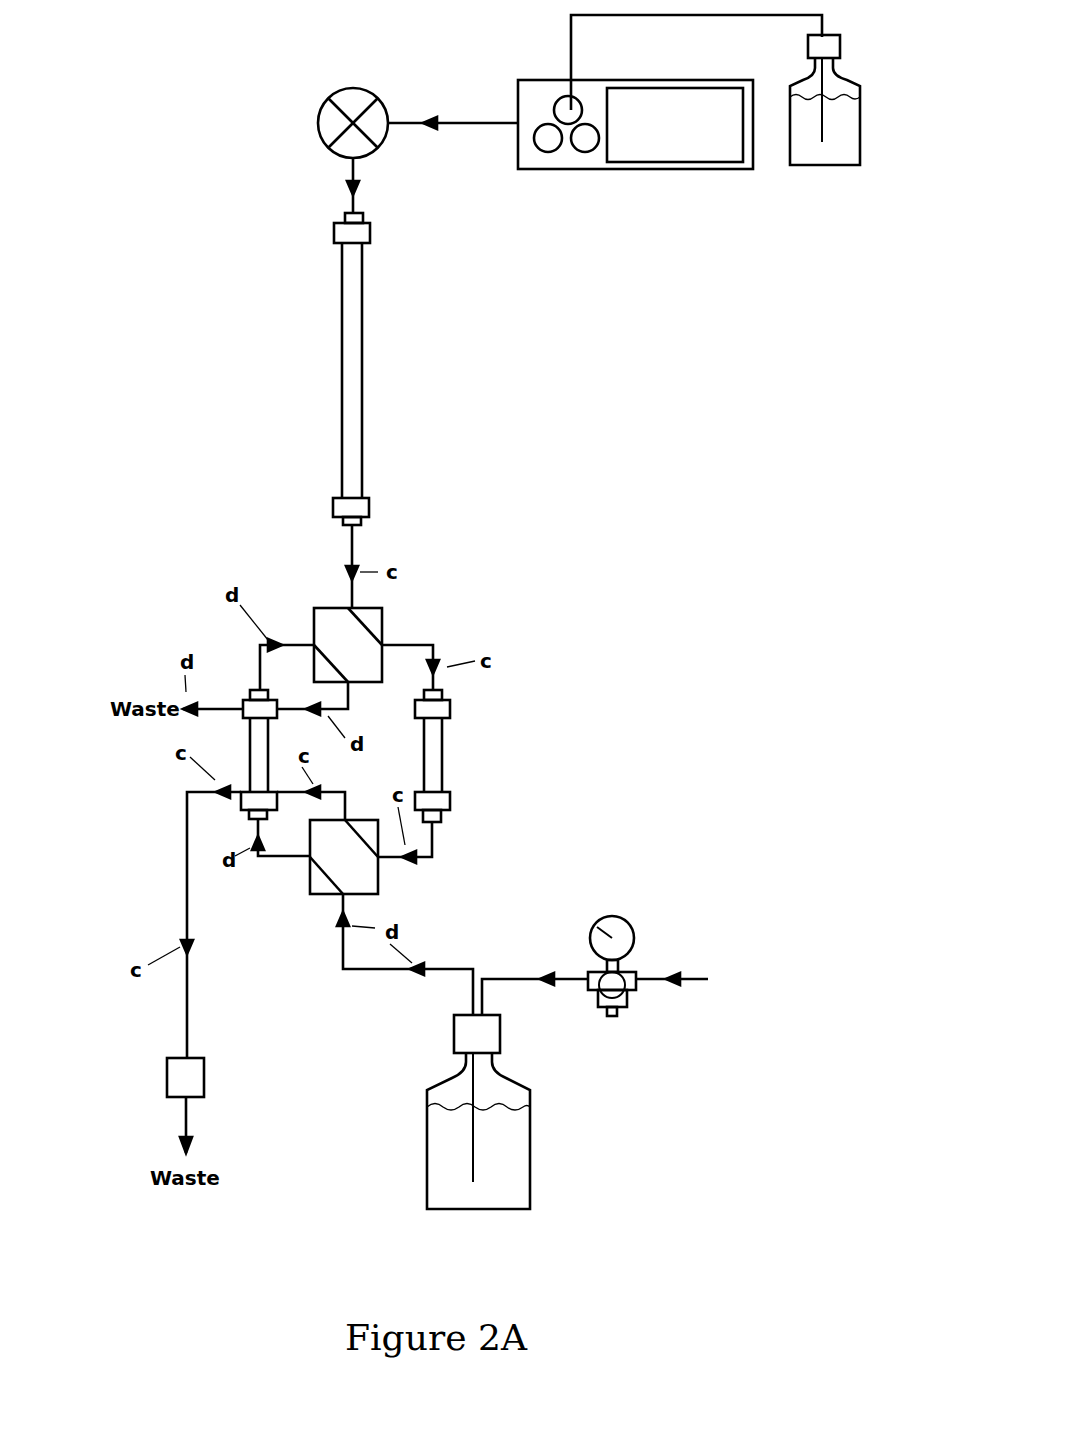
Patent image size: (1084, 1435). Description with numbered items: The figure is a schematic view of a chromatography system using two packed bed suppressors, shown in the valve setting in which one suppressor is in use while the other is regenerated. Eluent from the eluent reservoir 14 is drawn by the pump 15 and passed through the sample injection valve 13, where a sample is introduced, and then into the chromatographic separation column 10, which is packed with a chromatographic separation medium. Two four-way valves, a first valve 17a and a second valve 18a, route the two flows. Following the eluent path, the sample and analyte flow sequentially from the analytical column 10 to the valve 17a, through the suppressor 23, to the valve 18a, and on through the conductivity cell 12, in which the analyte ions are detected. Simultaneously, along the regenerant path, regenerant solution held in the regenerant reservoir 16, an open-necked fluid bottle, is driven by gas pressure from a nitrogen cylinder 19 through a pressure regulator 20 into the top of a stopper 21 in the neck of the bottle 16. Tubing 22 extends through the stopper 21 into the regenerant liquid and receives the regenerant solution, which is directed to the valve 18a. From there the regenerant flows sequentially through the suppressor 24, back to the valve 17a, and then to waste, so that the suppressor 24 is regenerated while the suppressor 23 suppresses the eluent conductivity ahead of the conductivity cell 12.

The chromatographic separation column 10 is at (352, 305).
The conductivity cell 12 is at (196, 1068).
The sample injection valve 13 is at (330, 112).
The eluent reservoir 14 is at (842, 84).
The pump 15 is at (690, 135).
The regenerant reservoir 16 is at (420, 1210).
The four-way valve 17a is at (316, 600).
The four-way valve 18a is at (306, 886).
The nitrogen cylinder 19 is at (690, 980).
The pressure regulator 20 is at (592, 926).
The stopper 21 is at (508, 1036).
The tubing 22 is at (470, 1089).
The suppressor 23 is at (245, 754).
The suppressor 24 is at (446, 756).